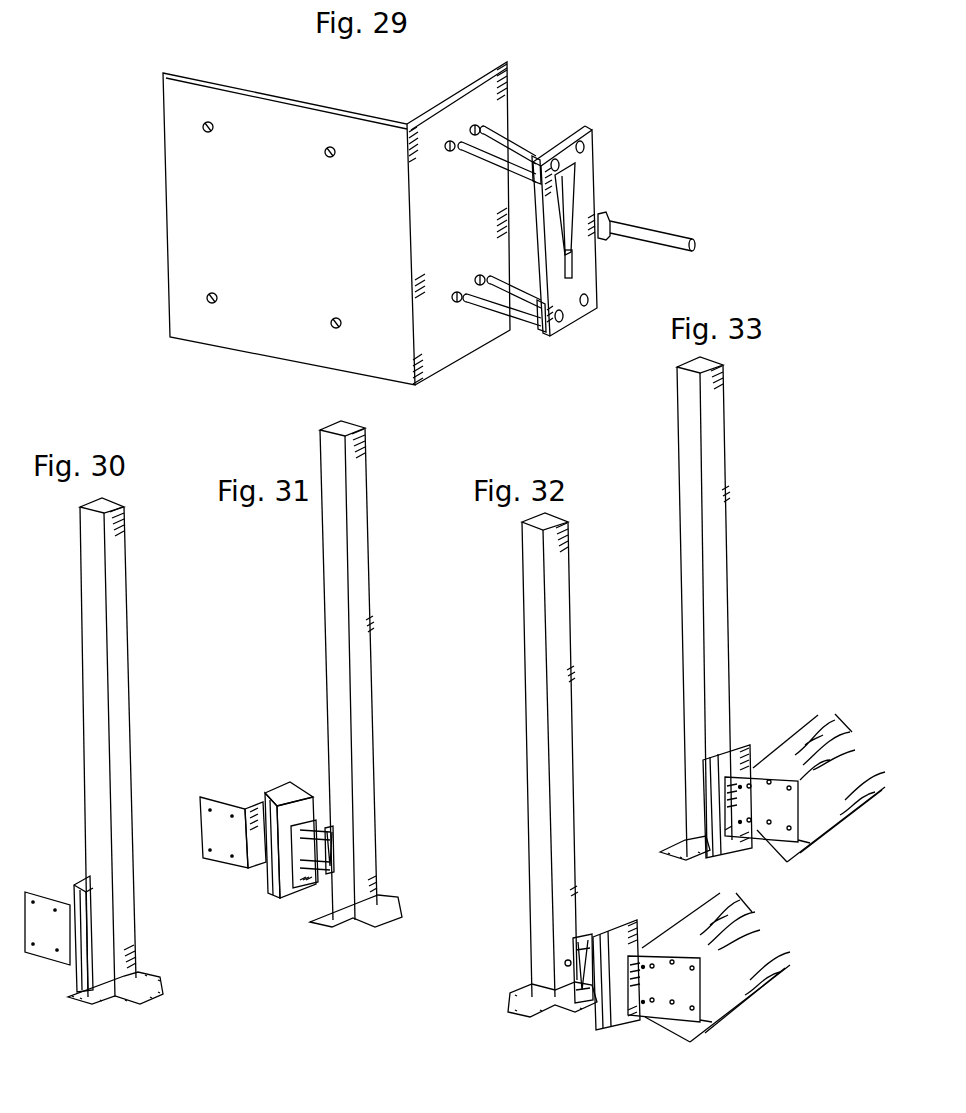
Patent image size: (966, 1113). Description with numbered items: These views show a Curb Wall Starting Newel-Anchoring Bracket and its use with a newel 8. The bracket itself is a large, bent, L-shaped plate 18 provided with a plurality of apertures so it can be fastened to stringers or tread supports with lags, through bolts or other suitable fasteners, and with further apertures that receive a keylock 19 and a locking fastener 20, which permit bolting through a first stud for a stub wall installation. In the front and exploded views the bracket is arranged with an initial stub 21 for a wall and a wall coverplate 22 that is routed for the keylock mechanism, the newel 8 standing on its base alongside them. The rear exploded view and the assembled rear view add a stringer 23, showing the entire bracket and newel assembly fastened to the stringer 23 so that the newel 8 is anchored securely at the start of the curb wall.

In FIG. 30, the newel 8 is at (118, 619).
In FIG. 29, the corner plate 18 is at (190, 247).
In FIG. 29, the keylock 19 is at (597, 150).
In FIG. 32, the keylock 19 is at (575, 982).
In FIG. 29, the locking fastener 20 is at (660, 222).
In FIG. 32, the locking fastener 20 is at (565, 963).
In FIG. 31, the initial stub 21 is at (270, 883).
In FIG. 31, the wall coverplate 22 is at (293, 888).
In FIG. 32, the stringer 23 is at (698, 930).